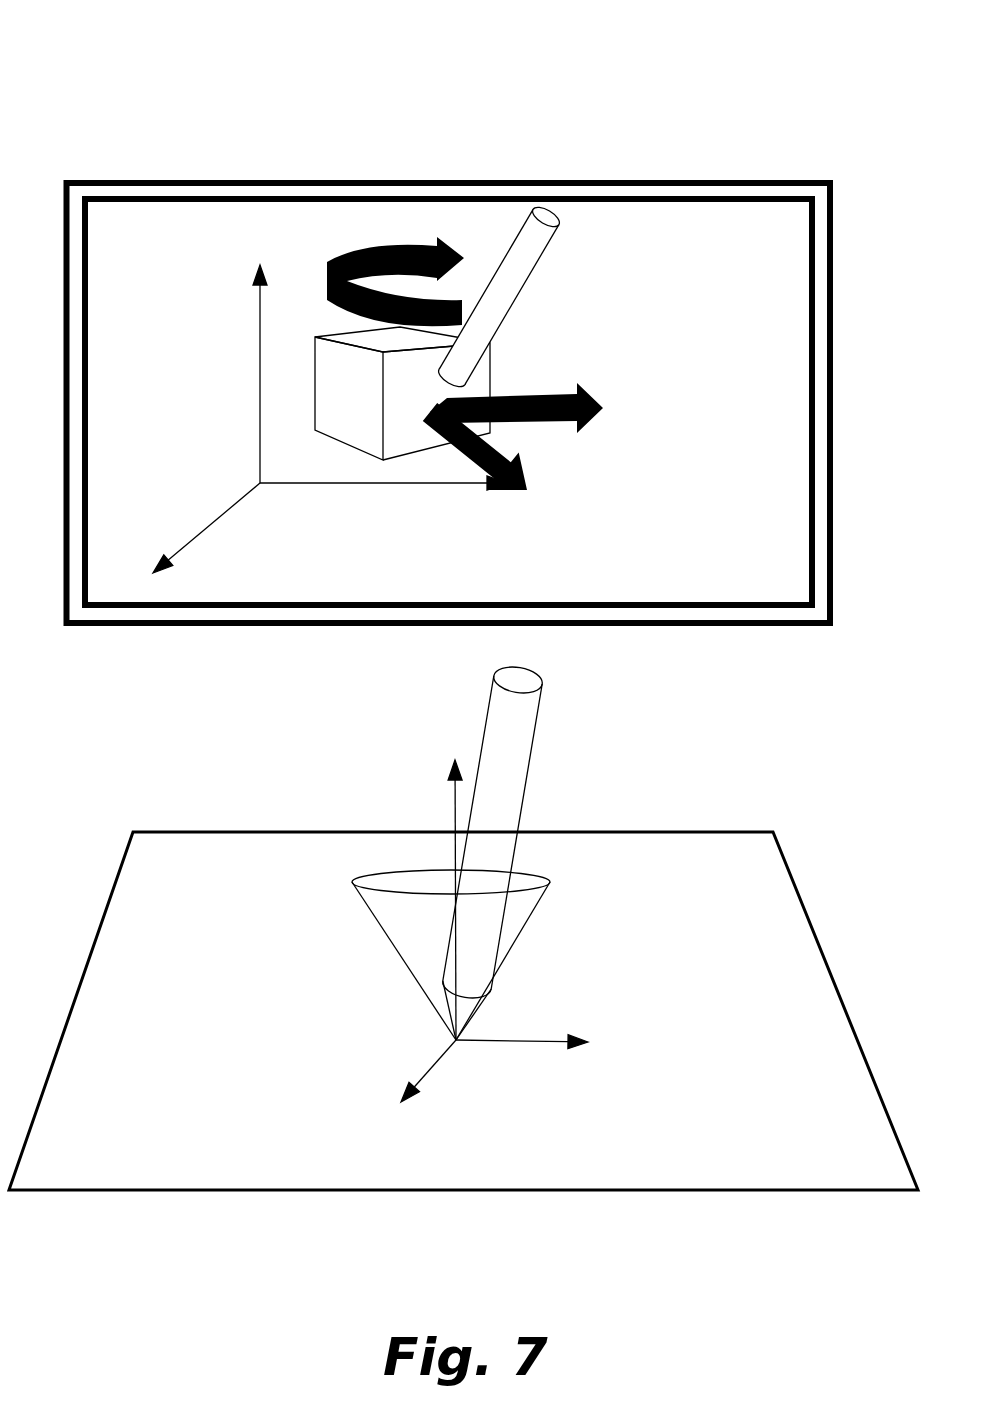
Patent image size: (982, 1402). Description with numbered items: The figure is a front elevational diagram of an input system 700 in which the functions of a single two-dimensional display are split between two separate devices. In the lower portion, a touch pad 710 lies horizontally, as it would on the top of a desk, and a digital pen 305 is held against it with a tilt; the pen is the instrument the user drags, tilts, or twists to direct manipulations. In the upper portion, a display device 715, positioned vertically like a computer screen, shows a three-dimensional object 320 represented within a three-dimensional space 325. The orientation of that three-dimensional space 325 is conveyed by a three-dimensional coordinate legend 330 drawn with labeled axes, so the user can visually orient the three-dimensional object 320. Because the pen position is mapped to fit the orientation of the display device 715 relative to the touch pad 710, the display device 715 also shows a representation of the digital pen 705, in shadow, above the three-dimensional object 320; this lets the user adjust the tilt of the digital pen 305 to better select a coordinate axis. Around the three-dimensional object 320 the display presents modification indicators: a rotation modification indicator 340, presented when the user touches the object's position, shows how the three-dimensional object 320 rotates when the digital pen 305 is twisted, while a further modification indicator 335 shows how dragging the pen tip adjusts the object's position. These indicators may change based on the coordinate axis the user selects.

The input system 700 is at (167, 80).
The display device 715 is at (174, 193).
The 3D space 325 is at (672, 577).
The 3D coordinate legend 330 is at (271, 511).
The rotation modification indicator 340 is at (355, 252).
The 3D object 320 is at (388, 450).
The representation of the digital pen 705 is at (493, 303).
The modification indicator 335 is at (533, 428).
The touch pad 710 is at (267, 855).
The digital pen 305 is at (508, 747).